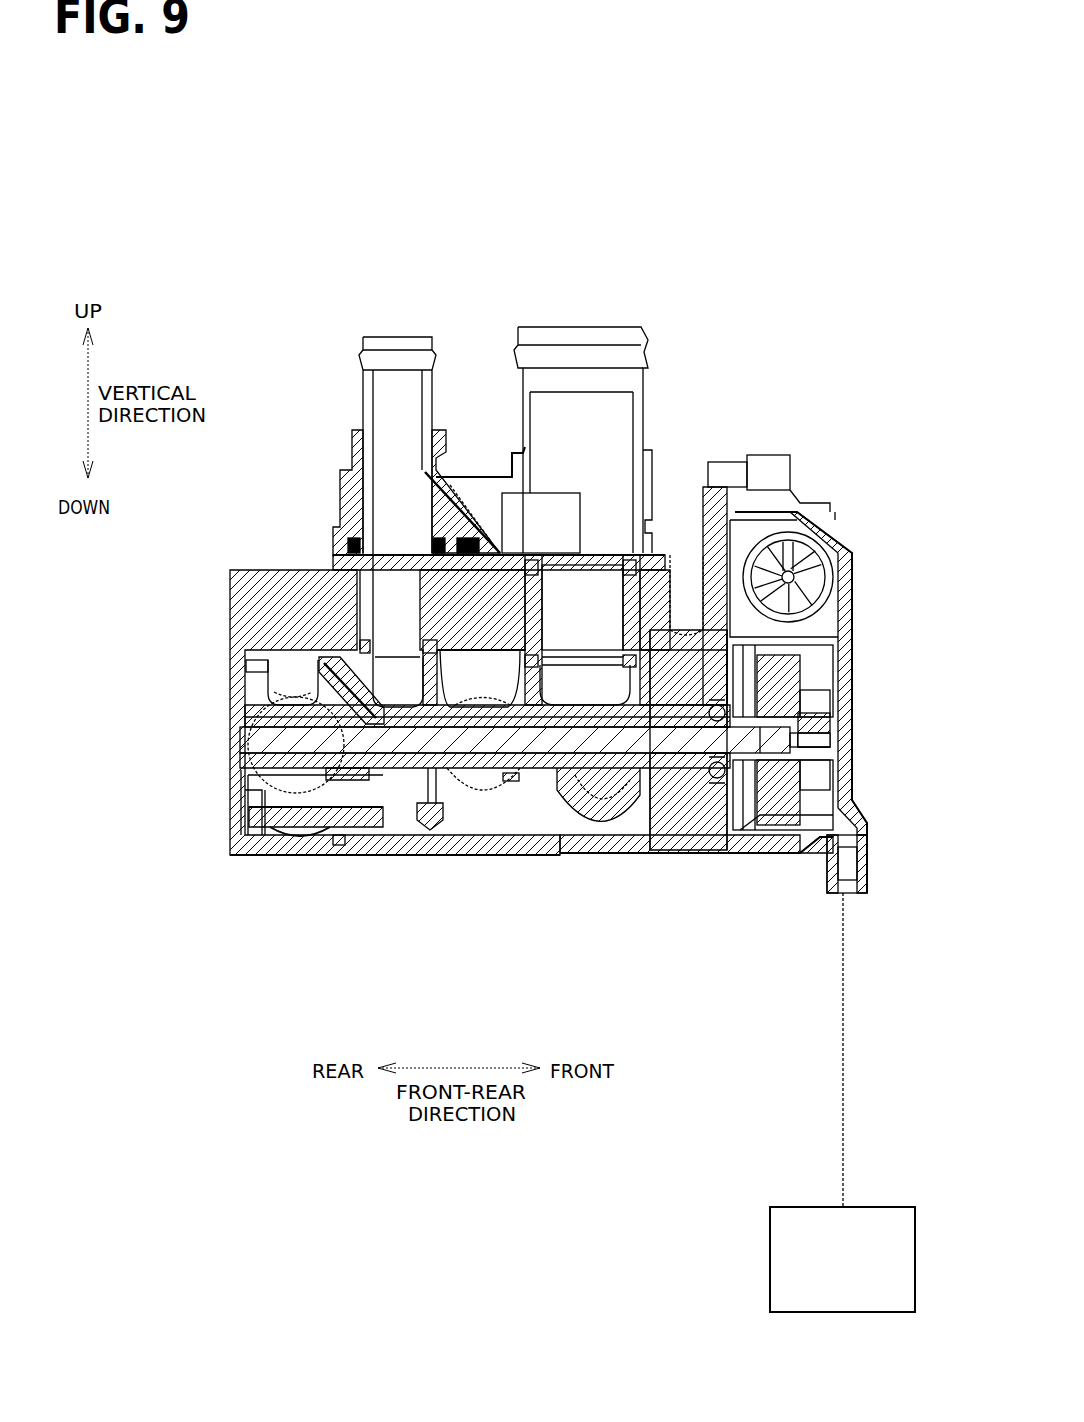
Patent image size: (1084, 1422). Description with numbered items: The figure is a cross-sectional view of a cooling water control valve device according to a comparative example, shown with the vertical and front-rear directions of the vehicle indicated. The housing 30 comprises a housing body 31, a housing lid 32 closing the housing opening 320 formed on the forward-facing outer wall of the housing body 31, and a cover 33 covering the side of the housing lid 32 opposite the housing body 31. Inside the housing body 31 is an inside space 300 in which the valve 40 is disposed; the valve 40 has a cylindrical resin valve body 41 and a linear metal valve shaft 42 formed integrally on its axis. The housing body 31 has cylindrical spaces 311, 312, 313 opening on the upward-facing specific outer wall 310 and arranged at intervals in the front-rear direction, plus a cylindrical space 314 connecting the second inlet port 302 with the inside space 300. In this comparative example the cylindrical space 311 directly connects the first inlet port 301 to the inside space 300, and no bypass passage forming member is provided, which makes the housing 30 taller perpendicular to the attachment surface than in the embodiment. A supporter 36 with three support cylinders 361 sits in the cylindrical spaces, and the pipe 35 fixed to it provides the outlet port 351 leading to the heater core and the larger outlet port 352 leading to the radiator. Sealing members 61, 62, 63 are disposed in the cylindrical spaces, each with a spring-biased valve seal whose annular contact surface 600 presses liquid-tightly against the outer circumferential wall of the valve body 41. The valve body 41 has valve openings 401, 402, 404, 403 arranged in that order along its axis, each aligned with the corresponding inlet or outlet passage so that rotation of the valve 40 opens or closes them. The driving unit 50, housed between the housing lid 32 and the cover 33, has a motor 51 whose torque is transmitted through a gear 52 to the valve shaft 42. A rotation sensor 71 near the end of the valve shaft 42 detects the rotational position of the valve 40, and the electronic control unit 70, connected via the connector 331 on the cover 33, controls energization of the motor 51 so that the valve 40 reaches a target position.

The housing 30 is at (240, 560).
The housing body 31 is at (240, 855).
The housing lid 32 is at (700, 835).
The cover 33 is at (855, 642).
The pipe 35 is at (521, 340).
The supporter 36 is at (496, 520).
The valve 40 is at (635, 830).
The valve body 41 is at (313, 835).
The valve shaft 42 is at (658, 830).
The driving unit 50 is at (830, 653).
The motor 51 is at (812, 580).
The gear 52 is at (836, 684).
The sealing member 61 is at (300, 662).
The sealing member 62 is at (392, 555).
The sealing member 63 is at (596, 555).
The electronic control unit 70 is at (805, 1215).
The rotation sensor 71 is at (852, 743).
The inside space 300 is at (500, 845).
The first inlet port 301 is at (270, 855).
The second inlet port 302 is at (428, 840).
The specific outer wall 310 is at (437, 530).
The cylindrical space 311 is at (266, 660).
The cylindrical space 312 is at (350, 527).
The cylindrical space 313 is at (547, 560).
The cylindrical space 314 is at (482, 785).
The housing opening 320 is at (752, 838).
The connector 331 is at (867, 890).
The outlet port 351 is at (402, 337).
The outlet port 352 is at (588, 327).
The support cylinder 361 is at (672, 555).
The valve opening 401 is at (265, 830).
The valve opening 402 is at (380, 835).
The valve opening 403 is at (577, 840).
The valve opening 404 is at (445, 835).
The contact surface 600 is at (339, 845).